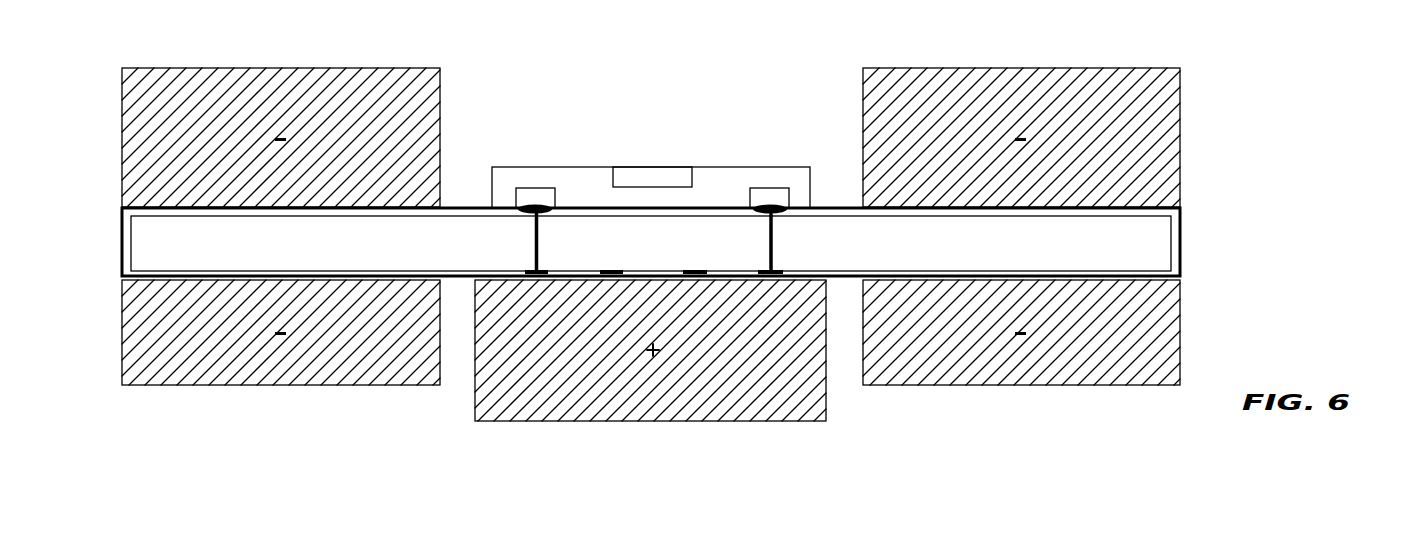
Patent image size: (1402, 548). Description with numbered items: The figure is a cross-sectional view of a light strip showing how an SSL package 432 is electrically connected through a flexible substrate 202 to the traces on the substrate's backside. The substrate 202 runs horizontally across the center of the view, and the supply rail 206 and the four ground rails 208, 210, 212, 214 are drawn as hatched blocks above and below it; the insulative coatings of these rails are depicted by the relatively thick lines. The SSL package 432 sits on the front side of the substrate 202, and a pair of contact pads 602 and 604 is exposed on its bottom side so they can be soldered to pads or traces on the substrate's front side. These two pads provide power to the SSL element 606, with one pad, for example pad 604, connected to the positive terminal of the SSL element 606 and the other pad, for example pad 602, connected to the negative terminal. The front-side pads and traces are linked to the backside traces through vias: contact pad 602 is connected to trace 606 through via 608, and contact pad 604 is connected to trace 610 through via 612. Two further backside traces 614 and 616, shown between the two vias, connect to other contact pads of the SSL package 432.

The flexible substrate 202 is at (1181, 248).
The supply rail 206 is at (637, 422).
The ground rail 208 is at (208, 67).
The ground rail 210 is at (1180, 132).
The ground rail 212 is at (1180, 342).
The ground rail 214 is at (230, 386).
The SSL package 432 is at (812, 167).
The contact pad 602 is at (532, 187).
The contact pad 604 is at (770, 187).
The SSL element 606 is at (653, 166).
The via 608 is at (535, 231).
The trace 610 is at (773, 270).
The via 612 is at (773, 247).
The trace 614 is at (612, 269).
The trace 616 is at (697, 269).